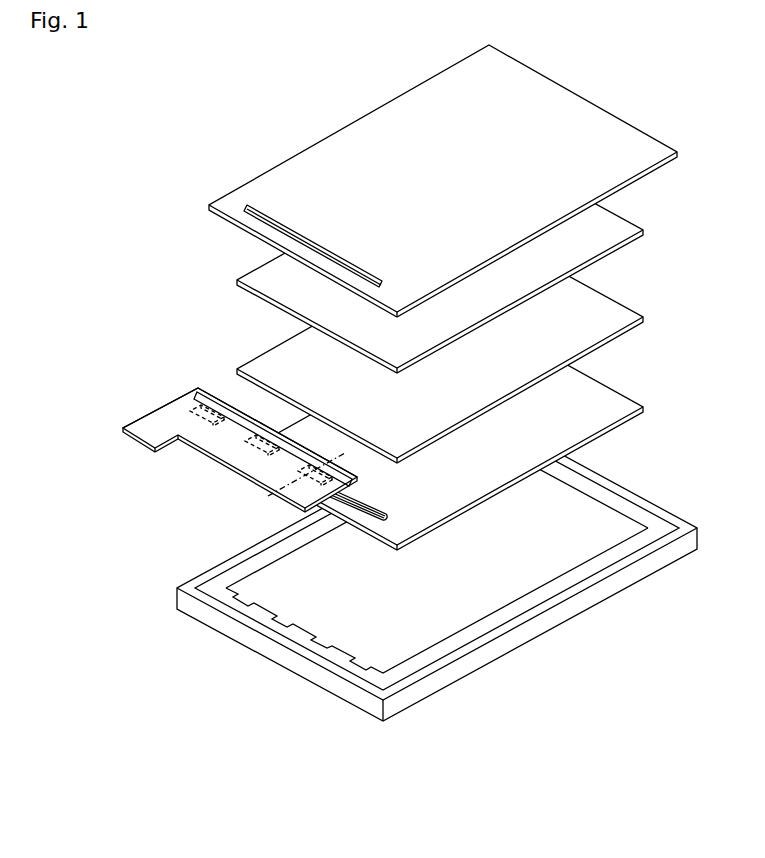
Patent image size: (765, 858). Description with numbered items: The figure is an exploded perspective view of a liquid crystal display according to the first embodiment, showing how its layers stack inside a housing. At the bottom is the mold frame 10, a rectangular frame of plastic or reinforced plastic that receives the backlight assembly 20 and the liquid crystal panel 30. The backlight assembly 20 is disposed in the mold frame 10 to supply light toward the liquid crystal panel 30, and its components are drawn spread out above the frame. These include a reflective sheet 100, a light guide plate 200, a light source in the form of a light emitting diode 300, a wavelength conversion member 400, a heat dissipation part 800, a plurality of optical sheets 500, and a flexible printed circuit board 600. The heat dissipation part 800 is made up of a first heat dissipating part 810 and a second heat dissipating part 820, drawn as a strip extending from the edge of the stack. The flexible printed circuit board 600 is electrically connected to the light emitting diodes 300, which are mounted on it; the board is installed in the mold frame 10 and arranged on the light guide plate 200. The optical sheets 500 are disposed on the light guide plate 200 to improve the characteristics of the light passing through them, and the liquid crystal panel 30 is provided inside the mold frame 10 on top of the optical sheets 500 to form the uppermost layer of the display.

The mold frame 10 is at (183, 575).
The backlight assembly 20 is at (64, 327).
The liquid crystal panel 30 is at (283, 173).
The reflective sheet 100 is at (302, 430).
The light guide plate 200 is at (212, 448).
The light emitting diode 300 is at (205, 425).
The wavelength conversion member 400 is at (268, 373).
The optical sheets 500 is at (297, 297).
The flexible printed circuit board 600 is at (214, 402).
The heat dissipation part 800 is at (112, 497).
The first heat dissipating part 810 is at (335, 491).
The second heat dissipating part 820 is at (372, 508).